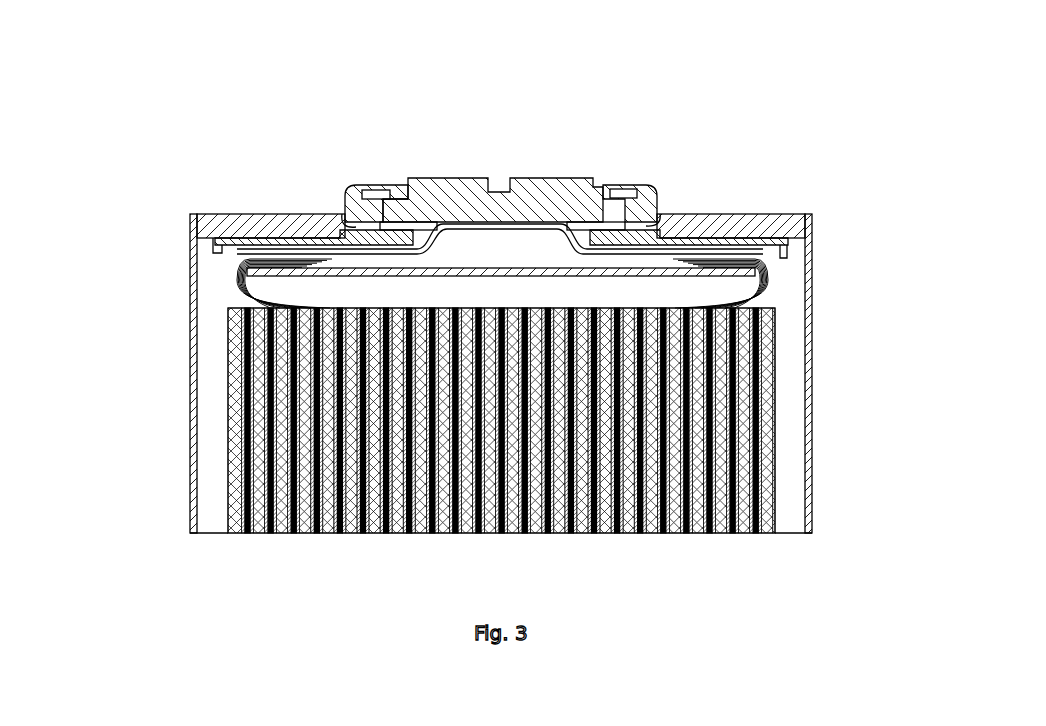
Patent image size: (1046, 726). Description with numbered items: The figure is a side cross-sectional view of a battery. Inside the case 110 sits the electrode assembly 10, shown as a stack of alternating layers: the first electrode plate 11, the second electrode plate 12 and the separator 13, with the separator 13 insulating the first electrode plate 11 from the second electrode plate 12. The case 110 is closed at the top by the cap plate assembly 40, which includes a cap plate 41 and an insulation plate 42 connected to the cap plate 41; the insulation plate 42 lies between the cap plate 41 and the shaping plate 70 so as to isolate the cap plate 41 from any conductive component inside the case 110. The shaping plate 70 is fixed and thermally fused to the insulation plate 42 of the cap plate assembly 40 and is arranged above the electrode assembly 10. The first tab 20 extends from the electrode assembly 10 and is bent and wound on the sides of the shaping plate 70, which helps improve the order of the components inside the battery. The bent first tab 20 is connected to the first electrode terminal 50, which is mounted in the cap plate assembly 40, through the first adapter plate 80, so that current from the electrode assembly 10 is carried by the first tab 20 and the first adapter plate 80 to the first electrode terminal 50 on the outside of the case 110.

The electrode assembly 10 is at (500, 456).
The first electrode plate 11 is at (231, 534).
The second electrode plate 12 is at (238, 534).
The separator 13 is at (500, 456).
The first tab 20 is at (233, 291).
The cap plate assembly 40 is at (519, 189).
The cap plate 41 is at (783, 218).
The insulation plate 42 is at (728, 243).
The first electrode terminal 50 is at (545, 180).
The shaping plate 70 is at (322, 268).
The first adapter plate 80 is at (663, 247).
The case 110 is at (812, 347).